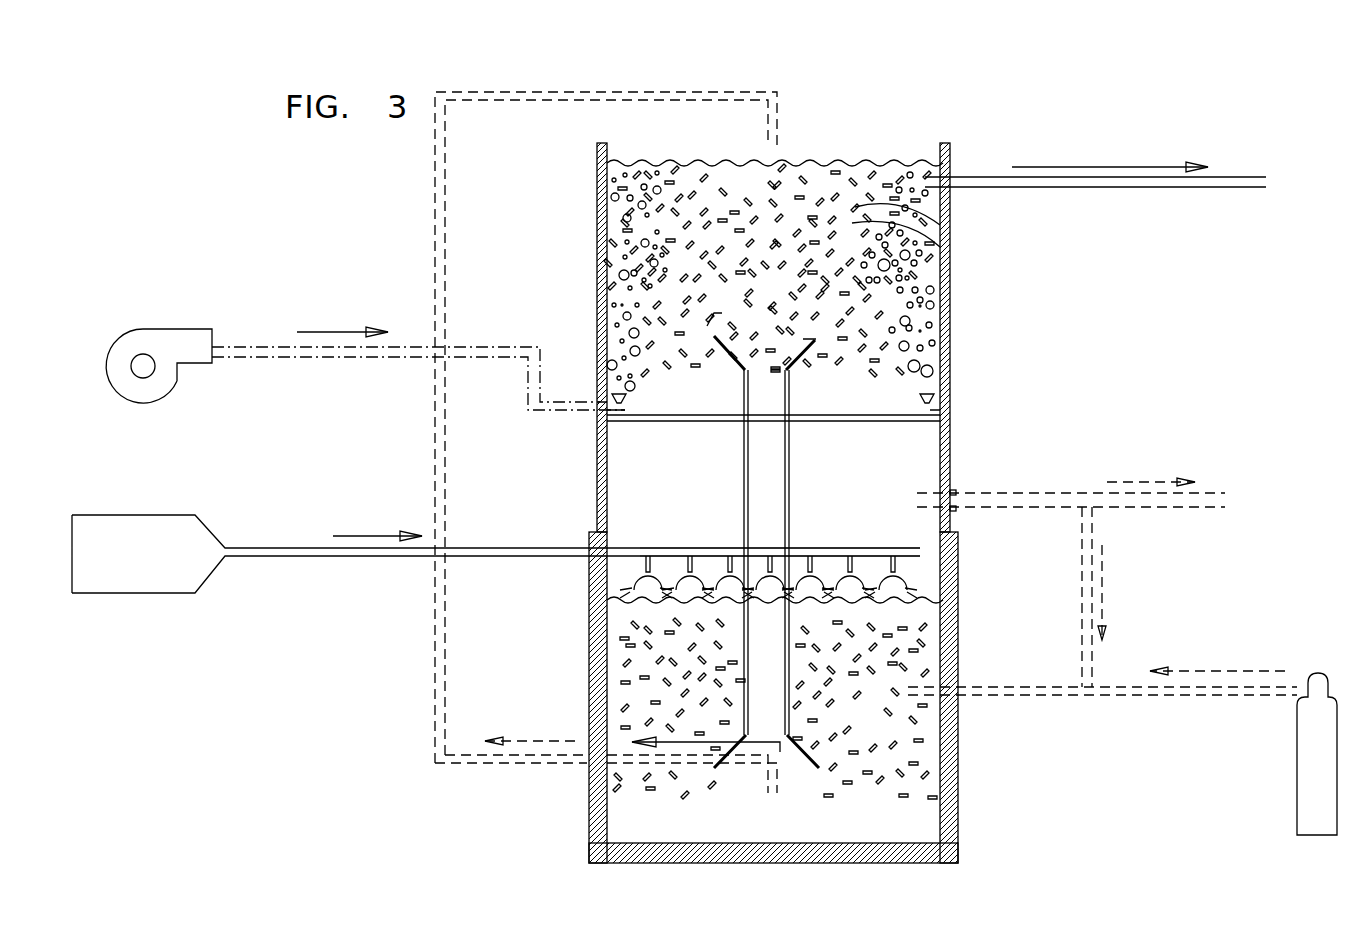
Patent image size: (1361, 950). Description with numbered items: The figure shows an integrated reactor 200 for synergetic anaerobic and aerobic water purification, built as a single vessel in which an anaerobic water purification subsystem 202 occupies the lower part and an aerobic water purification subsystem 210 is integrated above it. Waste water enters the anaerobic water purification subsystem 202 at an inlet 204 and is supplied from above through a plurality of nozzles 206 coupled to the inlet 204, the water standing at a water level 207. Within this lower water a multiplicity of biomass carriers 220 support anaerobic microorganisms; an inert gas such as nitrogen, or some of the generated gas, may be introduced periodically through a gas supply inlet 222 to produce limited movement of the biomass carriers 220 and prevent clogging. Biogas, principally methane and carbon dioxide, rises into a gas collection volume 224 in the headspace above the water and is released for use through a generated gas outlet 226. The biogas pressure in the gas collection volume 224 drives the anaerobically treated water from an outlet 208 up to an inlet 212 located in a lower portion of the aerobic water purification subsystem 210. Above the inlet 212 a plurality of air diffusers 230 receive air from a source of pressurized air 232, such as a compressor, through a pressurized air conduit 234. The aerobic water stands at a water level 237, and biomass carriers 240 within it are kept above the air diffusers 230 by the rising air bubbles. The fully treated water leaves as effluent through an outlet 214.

The integrated reactor 200 is at (962, 355).
The anaerobic water purification subsystem 202 is at (958, 660).
The inlet 204 is at (112, 512).
The nozzles 206 is at (847, 597).
The water level 207 is at (706, 536).
The outlet 208 is at (518, 760).
The aerobic water purification subsystem 210 is at (597, 255).
The inlet 212 is at (780, 138).
The outlet 214 is at (972, 177).
The biomass carriers 220 is at (852, 713).
The gas supply inlet 222 is at (1143, 695).
The gas collection volume 224 is at (663, 448).
The generated gas outlet 226 is at (1028, 507).
The air diffusers 230 is at (628, 401).
The source of pressurized air 232 is at (170, 380).
The pressurized air conduit 234 is at (297, 358).
The water level 237 is at (705, 160).
The biomass carriers 240 is at (950, 263).